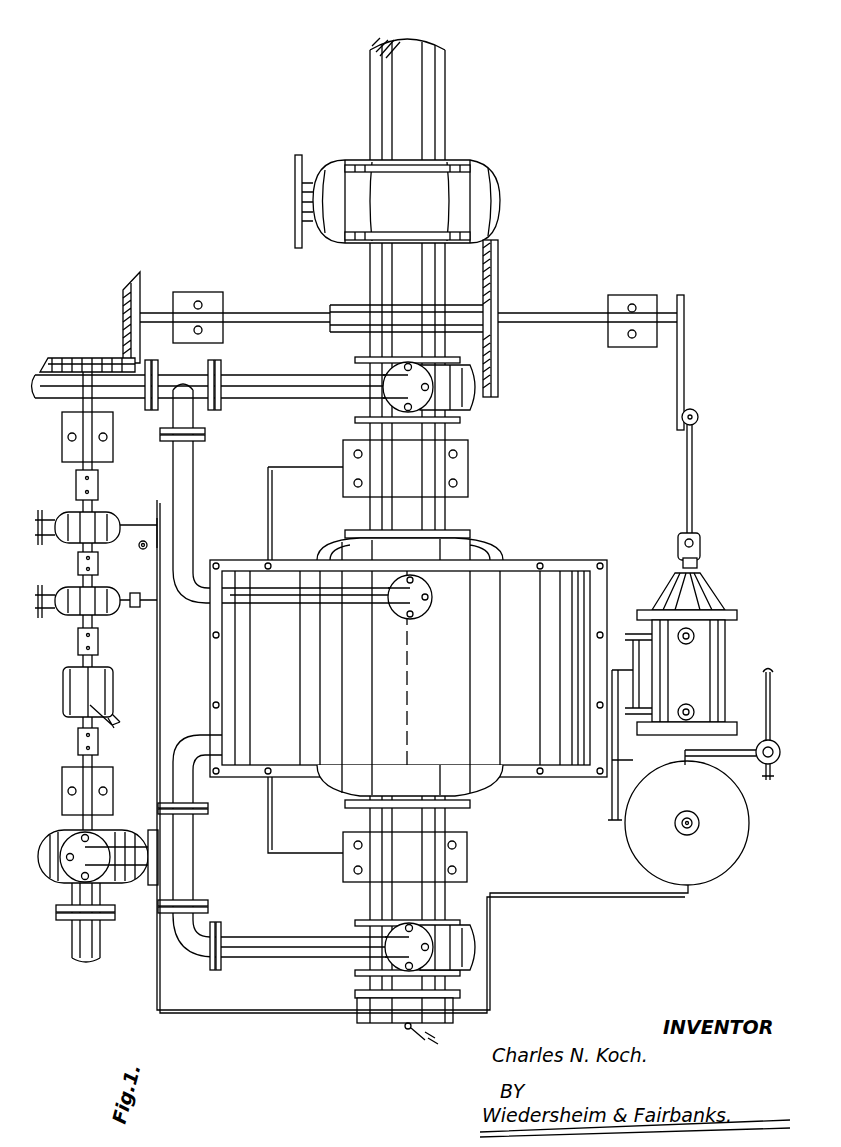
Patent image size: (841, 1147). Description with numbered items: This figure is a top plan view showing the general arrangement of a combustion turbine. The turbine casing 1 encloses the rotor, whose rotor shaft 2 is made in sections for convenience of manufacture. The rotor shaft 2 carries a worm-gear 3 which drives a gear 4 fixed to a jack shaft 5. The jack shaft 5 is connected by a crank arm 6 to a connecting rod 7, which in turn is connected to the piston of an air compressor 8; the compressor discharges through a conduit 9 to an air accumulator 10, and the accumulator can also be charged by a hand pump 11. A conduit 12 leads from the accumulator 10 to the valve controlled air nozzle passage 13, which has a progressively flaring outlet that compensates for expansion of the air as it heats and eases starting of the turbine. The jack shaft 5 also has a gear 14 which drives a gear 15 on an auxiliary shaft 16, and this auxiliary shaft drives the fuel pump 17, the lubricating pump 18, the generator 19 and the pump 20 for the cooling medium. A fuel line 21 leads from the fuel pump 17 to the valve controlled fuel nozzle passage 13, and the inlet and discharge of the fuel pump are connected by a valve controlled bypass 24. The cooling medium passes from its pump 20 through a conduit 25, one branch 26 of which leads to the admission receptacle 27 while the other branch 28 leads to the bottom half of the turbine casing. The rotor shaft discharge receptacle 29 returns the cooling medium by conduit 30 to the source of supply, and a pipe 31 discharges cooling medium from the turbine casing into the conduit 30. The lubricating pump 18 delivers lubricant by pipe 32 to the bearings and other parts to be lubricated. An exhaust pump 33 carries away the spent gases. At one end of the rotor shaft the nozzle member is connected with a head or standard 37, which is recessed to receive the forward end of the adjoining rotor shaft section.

The turbine casing 1 is at (435, 607).
The rotor shaft 2 is at (407, 514).
The worm-gear 3 is at (340, 307).
The gear 4 is at (483, 296).
The jack shaft 5 is at (565, 313).
The crank arm 6 is at (683, 300).
The connecting rod 7 is at (688, 485).
The air compressor 8 is at (678, 548).
The conduit 9 is at (648, 735).
The air accumulator 10 is at (687, 823).
The hand pump 11 is at (760, 742).
The conduit 12 is at (578, 893).
The valve controlled nozzle passage 13 is at (445, 1026).
The gear 14 is at (123, 310).
The gear 15 is at (98, 358).
The auxiliary shaft 16 is at (70, 405).
The fuel pump 17 is at (66, 542).
The lubricating pump 18 is at (67, 620).
The generator 19 is at (63, 690).
The pump for the cooling medium 20 is at (45, 855).
The fuel line 21 is at (157, 512).
The valve controlled bypass 24 is at (143, 550).
The conduit 25 is at (112, 788).
The branch 26 is at (325, 937).
The admission receptacle 27 is at (355, 957).
The branch 28 is at (200, 782).
The rotor shaft discharge receptacle 29 is at (355, 408).
The conduit 30 is at (295, 400).
The pipe 31 is at (193, 540).
The pipe 32 is at (143, 607).
The exhaust pump 33 is at (397, 201).
The head or standard 37 is at (380, 1023).